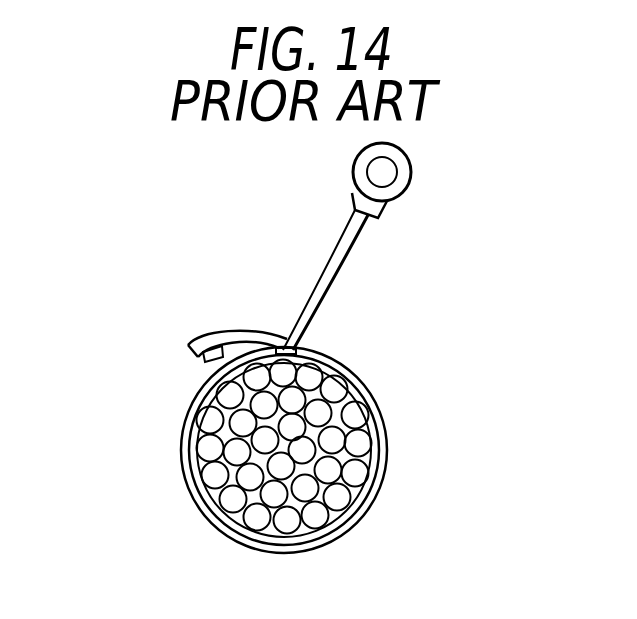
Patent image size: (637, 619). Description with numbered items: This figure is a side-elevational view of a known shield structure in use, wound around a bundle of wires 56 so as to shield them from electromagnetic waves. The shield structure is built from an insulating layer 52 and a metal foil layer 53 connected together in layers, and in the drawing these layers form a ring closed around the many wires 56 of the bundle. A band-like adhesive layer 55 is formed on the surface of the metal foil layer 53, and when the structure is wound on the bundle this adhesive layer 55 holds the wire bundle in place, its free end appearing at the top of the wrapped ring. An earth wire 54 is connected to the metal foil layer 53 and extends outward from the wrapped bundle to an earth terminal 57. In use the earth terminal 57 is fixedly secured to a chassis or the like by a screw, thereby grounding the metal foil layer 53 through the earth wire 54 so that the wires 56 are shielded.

The insulating layer 52 is at (181, 436).
The metal foil layer 53 is at (203, 503).
The earth wire 54 is at (338, 253).
The band-like adhesive layer 55 is at (198, 364).
The wires 56 is at (356, 412).
The earth terminal 57 is at (402, 180).